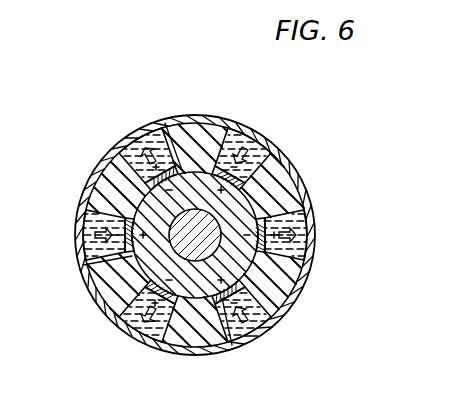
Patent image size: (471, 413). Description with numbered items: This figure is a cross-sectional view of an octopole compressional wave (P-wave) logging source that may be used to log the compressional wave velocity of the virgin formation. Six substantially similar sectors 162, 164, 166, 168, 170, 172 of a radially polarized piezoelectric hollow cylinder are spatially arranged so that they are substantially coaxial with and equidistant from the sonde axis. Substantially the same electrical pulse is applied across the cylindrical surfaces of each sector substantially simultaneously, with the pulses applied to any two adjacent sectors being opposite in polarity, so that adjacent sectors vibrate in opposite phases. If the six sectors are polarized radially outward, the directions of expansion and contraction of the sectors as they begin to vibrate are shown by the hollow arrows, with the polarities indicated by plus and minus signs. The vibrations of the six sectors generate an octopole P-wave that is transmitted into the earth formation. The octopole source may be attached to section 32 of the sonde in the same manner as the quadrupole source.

The section 32 is at (196, 114).
The sector 162 is at (160, 123).
The sector 164 is at (85, 262).
The sector 166 is at (130, 323).
The sector 168 is at (230, 340).
The sector 170 is at (265, 232).
The sector 172 is at (250, 153).